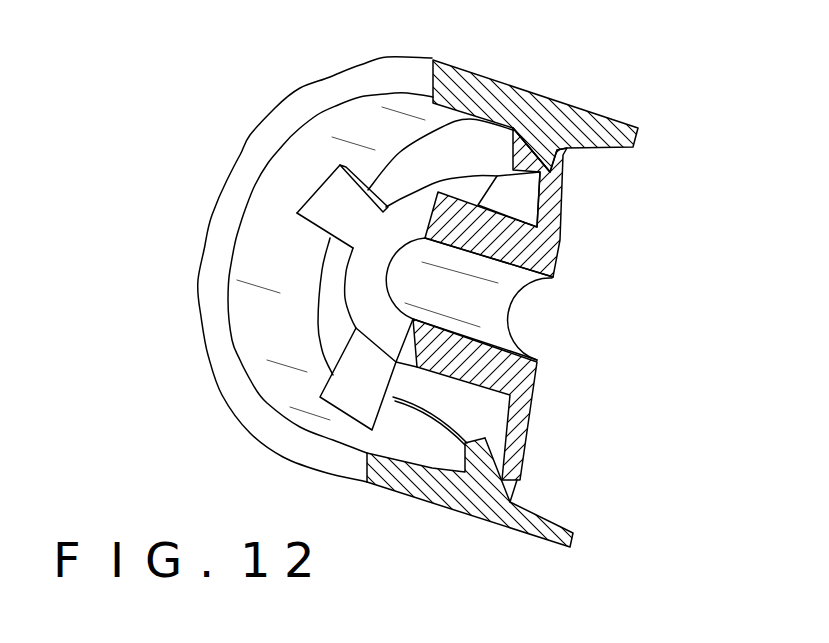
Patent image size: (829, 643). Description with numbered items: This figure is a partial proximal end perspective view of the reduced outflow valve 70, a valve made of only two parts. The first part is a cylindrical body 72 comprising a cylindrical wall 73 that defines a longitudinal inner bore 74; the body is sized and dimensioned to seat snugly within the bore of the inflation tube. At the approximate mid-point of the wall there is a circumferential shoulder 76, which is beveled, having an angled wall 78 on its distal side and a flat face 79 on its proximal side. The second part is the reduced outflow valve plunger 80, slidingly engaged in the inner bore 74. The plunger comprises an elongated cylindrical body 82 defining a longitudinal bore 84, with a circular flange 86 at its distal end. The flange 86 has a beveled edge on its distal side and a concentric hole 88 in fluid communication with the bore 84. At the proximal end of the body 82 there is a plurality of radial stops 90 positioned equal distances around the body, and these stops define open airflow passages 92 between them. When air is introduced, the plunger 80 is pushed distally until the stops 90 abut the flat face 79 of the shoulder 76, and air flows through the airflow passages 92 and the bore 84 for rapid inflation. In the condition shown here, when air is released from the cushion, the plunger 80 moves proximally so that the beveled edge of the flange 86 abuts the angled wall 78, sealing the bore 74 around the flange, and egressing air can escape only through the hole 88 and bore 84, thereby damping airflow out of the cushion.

The reduced outflow valve 70 is at (655, 52).
The cylindrical body 72 is at (452, 92).
The cylindrical wall 73 is at (416, 485).
The longitudinal inner bore 74 is at (266, 320).
The circumferential shoulder 76 is at (543, 128).
The angled wall 78 is at (512, 502).
The flat face 79 is at (442, 445).
The reduced outflow valve plunger 80 is at (580, 192).
The elongated cylindrical body 82 is at (478, 203).
The longitudinal bore 84 is at (464, 302).
The circular flange 86 is at (522, 426).
The concentric hole 88 is at (525, 312).
The radial stops 90 is at (357, 398).
The airflow passages 92 is at (335, 329).